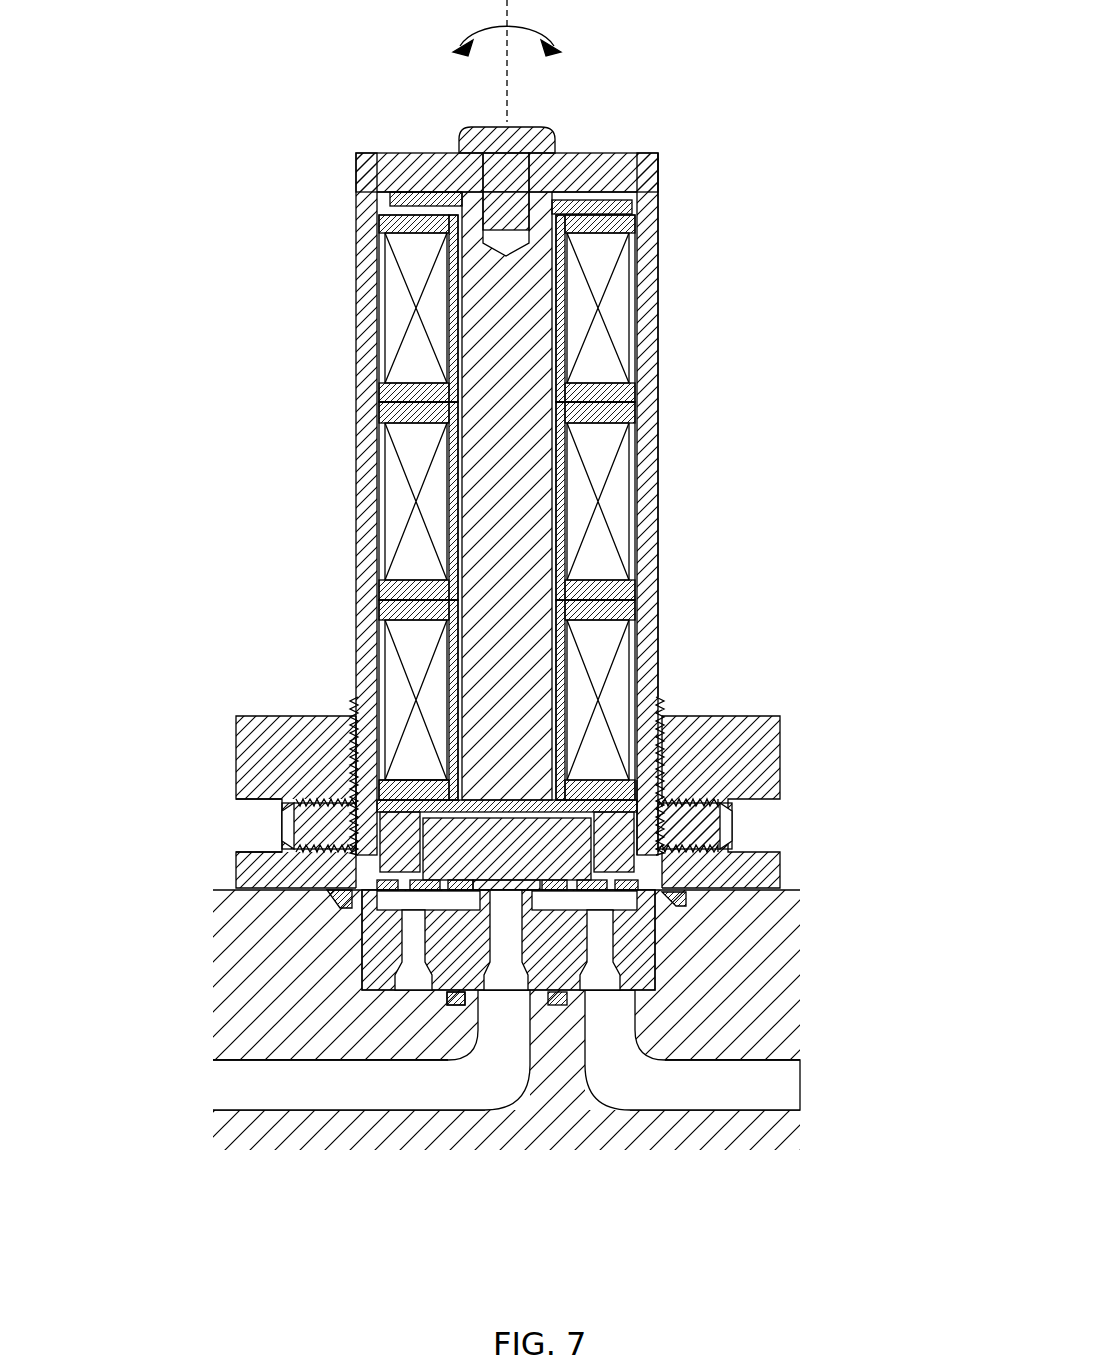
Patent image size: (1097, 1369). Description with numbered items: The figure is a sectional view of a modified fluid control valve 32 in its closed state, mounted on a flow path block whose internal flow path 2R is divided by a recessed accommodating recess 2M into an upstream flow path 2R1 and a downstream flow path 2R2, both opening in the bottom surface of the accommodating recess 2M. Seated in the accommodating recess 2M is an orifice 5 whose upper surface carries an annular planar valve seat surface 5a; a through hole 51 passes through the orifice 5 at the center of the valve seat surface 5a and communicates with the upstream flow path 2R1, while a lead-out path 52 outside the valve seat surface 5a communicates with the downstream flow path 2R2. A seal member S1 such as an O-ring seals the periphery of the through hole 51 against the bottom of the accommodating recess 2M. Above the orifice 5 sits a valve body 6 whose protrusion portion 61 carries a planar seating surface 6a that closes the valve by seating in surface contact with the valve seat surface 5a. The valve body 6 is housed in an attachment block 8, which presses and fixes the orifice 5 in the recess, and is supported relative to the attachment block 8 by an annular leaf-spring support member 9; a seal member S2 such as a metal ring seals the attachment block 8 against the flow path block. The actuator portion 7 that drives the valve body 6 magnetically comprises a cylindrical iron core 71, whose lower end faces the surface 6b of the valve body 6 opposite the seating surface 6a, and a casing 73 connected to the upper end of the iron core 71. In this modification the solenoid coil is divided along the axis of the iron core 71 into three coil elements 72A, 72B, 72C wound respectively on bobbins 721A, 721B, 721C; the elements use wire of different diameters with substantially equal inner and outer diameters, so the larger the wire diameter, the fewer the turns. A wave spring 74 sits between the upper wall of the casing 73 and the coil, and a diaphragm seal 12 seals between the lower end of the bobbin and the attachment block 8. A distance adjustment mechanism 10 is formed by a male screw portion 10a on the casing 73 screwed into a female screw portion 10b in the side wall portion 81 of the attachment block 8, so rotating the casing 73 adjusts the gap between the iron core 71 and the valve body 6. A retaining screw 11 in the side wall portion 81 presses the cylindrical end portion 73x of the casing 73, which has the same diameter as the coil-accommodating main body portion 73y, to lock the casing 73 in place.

The fluid control valve 32 is at (300, 108).
The actuator portion 7 is at (521, 507).
The wave spring 74 is at (458, 206).
The bobbin 721C is at (440, 293).
The coil element 72C is at (446, 308).
The iron core 71 is at (470, 368).
The accommodating main body portion 73y is at (660, 448).
The bobbin 721B is at (440, 483).
The coil element 72B is at (446, 501).
The casing 73 is at (356, 590).
The surface of the valve body opposite to the seating surface 6b is at (512, 810).
The distance adjustment mechanism 10 is at (798, 654).
The male screw portion 10a is at (660, 703).
The female screw portion 10b is at (705, 716).
The bobbin 721A is at (440, 642).
The coil element 72A is at (407, 700).
The attachment block 8 is at (246, 714).
The diaphragm seal 12 is at (415, 768).
The valve body 6 is at (420, 832).
The valve seat surface 5a is at (665, 775).
The side wall portion 81 is at (762, 790).
The retaining screw 11 is at (283, 827).
The support member 9 is at (335, 888).
The cylindrical end portion 73x is at (640, 884).
The accommodating recess 2M is at (350, 922).
The seal member S2 is at (688, 898).
The protrusion portion 61 is at (505, 976).
The orifice 5 is at (535, 1078).
The seating surface 6a is at (400, 958).
The lead-out path 52 is at (450, 1000).
The through hole 51 is at (512, 940).
The seal member S1 is at (458, 1006).
The upstream flow path 2R1 is at (480, 1090).
The downstream flow path 2R2 is at (662, 1090).
The internal flow path 2R is at (632, 1220).